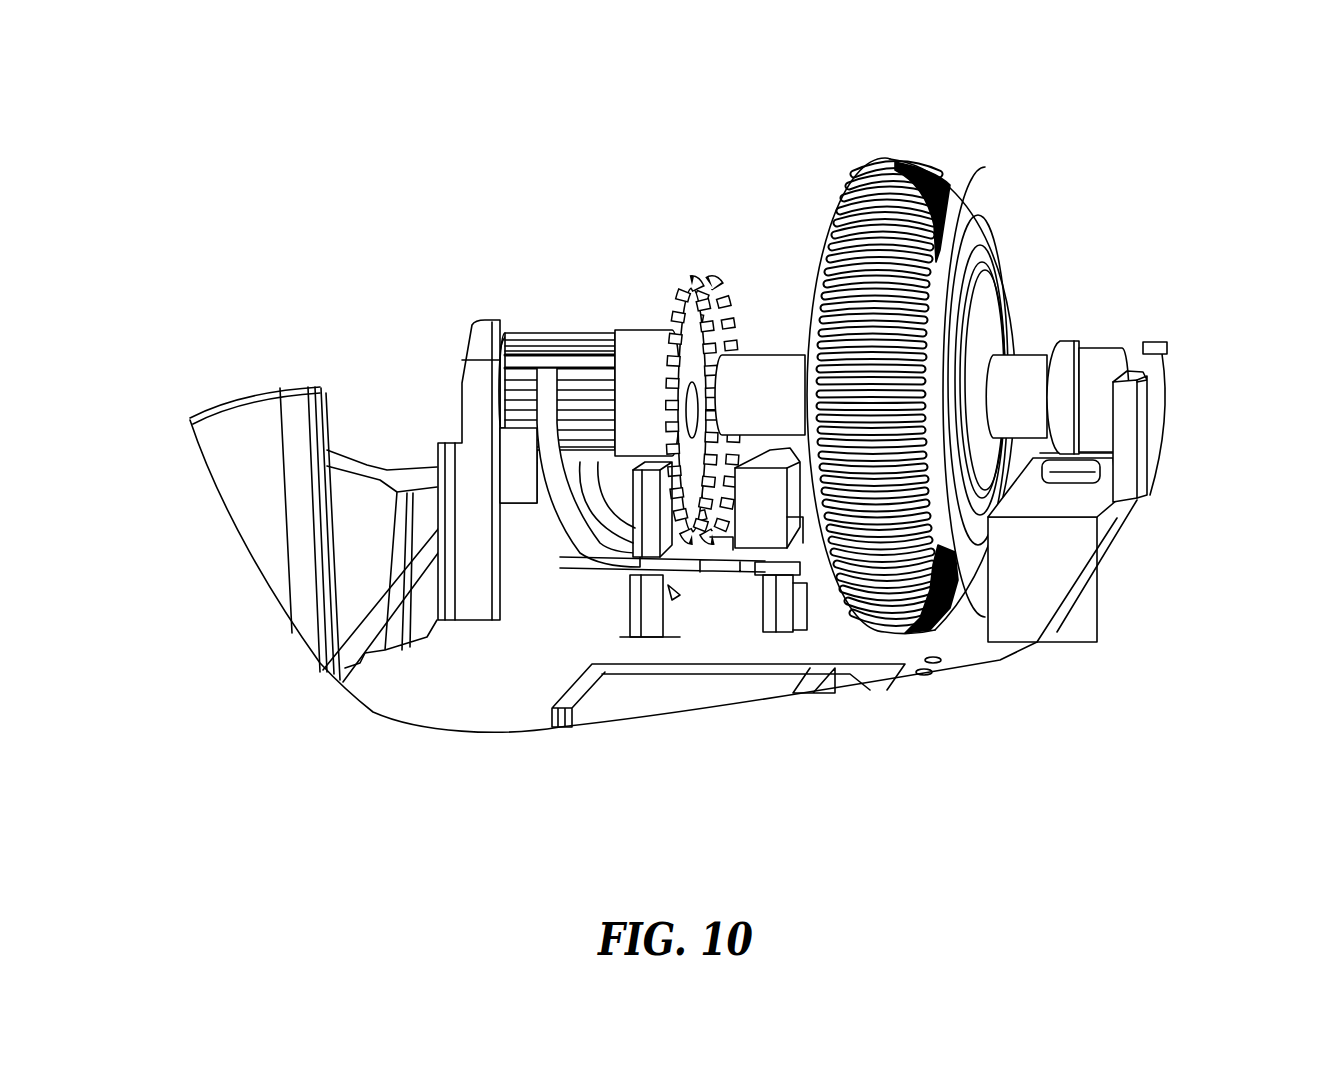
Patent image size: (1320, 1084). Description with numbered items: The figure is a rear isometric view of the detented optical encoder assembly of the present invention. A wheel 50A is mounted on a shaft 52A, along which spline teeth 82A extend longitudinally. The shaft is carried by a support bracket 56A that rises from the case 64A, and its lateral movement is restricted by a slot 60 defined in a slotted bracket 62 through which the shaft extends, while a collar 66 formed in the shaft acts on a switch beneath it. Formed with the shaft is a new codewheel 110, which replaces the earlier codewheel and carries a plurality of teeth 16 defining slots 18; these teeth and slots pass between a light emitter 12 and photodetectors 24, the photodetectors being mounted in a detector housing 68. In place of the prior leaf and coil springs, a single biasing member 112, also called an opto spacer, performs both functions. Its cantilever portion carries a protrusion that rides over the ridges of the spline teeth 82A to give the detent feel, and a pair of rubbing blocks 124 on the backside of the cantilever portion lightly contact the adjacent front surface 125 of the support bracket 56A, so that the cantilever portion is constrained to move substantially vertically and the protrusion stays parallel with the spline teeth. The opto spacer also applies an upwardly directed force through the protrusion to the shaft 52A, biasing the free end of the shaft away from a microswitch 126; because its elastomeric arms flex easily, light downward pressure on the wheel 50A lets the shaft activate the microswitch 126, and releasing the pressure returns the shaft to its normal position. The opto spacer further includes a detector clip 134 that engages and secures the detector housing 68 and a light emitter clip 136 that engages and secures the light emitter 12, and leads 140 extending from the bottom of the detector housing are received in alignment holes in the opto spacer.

The wheel 50A is at (970, 207).
The shaft 52A is at (788, 357).
The teeth 16 is at (688, 295).
The slots 18 is at (690, 312).
The codewheel 110 is at (708, 273).
The spline teeth 82A is at (545, 330).
The support bracket 56A is at (478, 347).
The front surface 125 is at (500, 450).
The rubbing blocks 124 is at (513, 477).
The case 64A is at (403, 688).
The light emitter 12 is at (650, 545).
The light emitter clip 136 is at (680, 603).
The biasing member 112 is at (633, 636).
The photodetectors 24 is at (714, 545).
The leads 140 is at (770, 560).
The detector housing 68 is at (816, 555).
The detector clip 134 is at (790, 543).
The microswitch 126 is at (1082, 478).
The collar 66 is at (1070, 340).
The slot 60 is at (1155, 343).
The slotted bracket 62 is at (1127, 433).